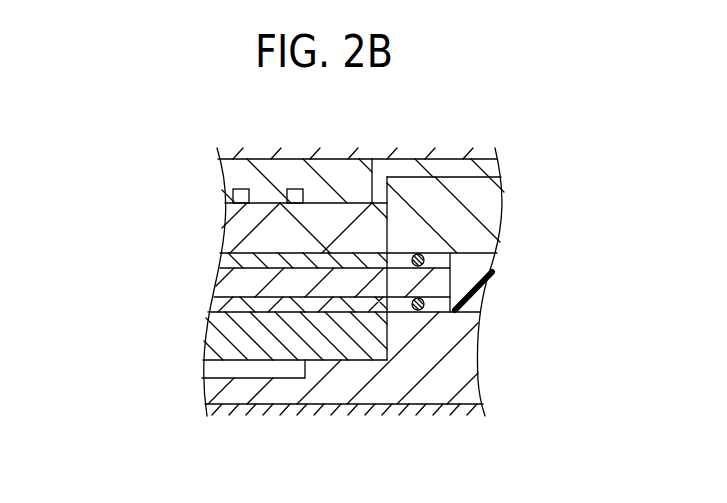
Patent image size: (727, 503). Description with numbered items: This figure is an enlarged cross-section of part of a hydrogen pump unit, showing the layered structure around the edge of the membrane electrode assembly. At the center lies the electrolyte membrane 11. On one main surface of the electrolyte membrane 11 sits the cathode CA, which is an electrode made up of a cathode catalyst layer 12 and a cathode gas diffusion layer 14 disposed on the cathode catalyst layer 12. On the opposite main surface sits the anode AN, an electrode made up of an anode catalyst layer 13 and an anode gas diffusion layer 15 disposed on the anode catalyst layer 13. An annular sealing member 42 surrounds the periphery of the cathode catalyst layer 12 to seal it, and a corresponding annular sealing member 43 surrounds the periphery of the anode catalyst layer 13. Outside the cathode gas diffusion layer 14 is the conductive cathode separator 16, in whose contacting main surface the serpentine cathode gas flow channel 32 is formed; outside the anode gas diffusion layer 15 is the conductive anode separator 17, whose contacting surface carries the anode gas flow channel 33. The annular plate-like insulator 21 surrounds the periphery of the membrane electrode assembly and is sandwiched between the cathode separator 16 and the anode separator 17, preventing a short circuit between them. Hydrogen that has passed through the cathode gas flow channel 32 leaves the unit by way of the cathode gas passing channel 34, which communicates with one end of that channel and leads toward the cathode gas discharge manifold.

The electrolyte membrane 11 is at (237, 280).
The cathode catalyst layer 12 is at (232, 263).
The anode catalyst layer 13 is at (215, 304).
The cathode gas diffusion layer 14 is at (243, 233).
The anode gas diffusion layer 15 is at (218, 336).
The cathode separator 16 is at (483, 213).
The anode separator 17 is at (463, 357).
The insulator 21 is at (483, 267).
The cathode gas flow channel 32 is at (236, 197).
The anode gas flow channel 33 is at (213, 369).
The cathode gas passing channel 34 is at (483, 168).
The annular sealing member 42 is at (420, 253).
The annular sealing member 43 is at (420, 312).
The cathode CA is at (93, 190).
The anode AN is at (93, 315).